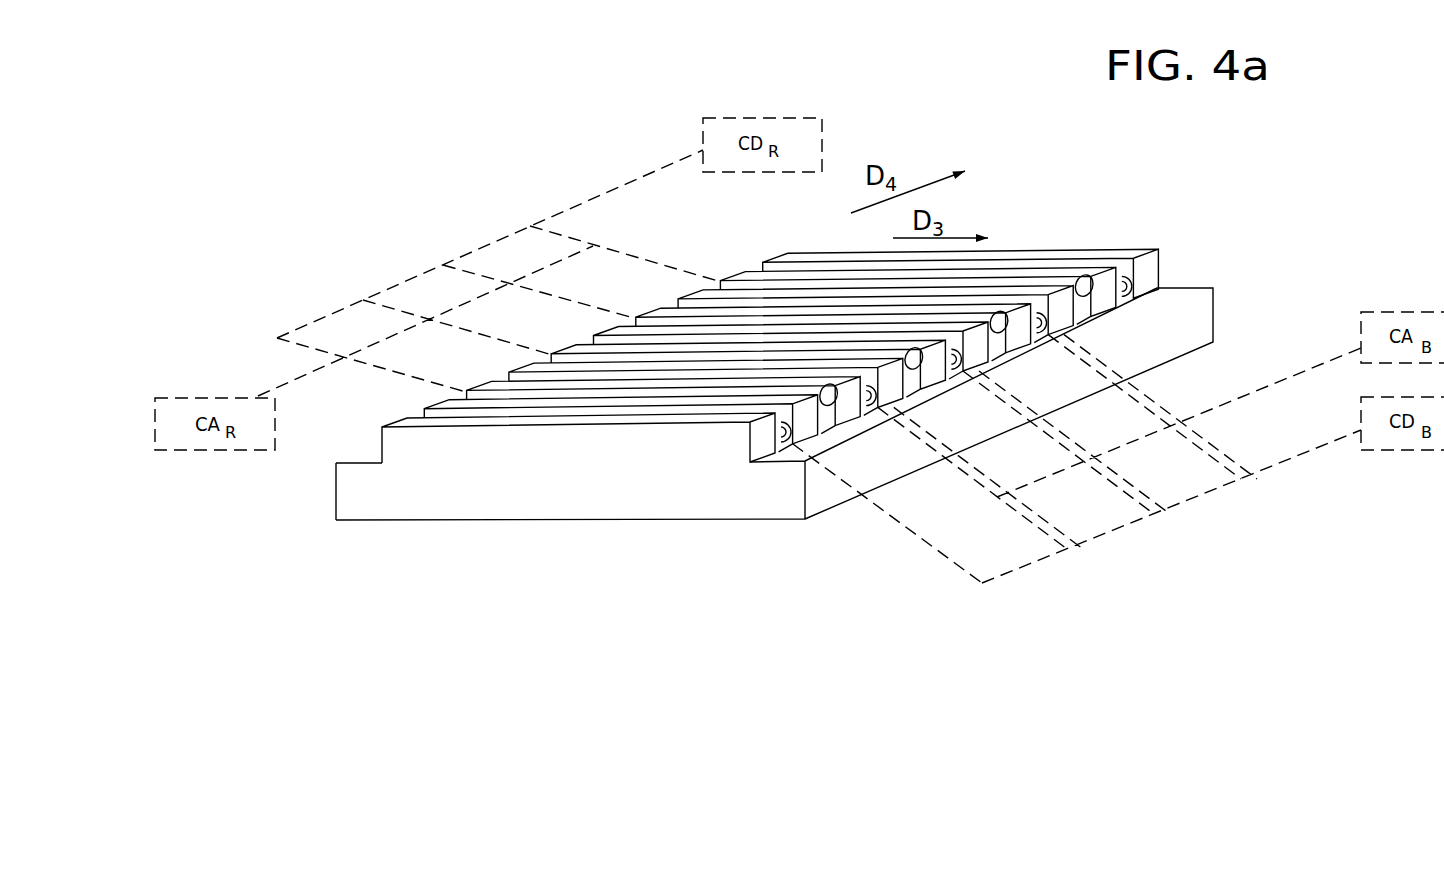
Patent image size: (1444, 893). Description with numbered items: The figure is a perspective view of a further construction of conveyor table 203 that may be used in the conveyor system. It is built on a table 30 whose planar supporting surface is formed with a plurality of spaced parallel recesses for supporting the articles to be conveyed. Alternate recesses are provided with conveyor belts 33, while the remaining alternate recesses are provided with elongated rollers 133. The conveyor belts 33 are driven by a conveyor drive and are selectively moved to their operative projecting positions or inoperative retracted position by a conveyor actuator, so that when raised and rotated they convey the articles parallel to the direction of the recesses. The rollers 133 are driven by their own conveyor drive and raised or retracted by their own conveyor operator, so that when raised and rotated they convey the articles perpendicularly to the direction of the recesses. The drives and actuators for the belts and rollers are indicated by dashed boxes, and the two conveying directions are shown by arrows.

The table 30 is at (774, 424).
The conveyor table 203 is at (1042, 172).
The conveyor belt 33 is at (781, 442).
The roller 133 is at (1000, 310).